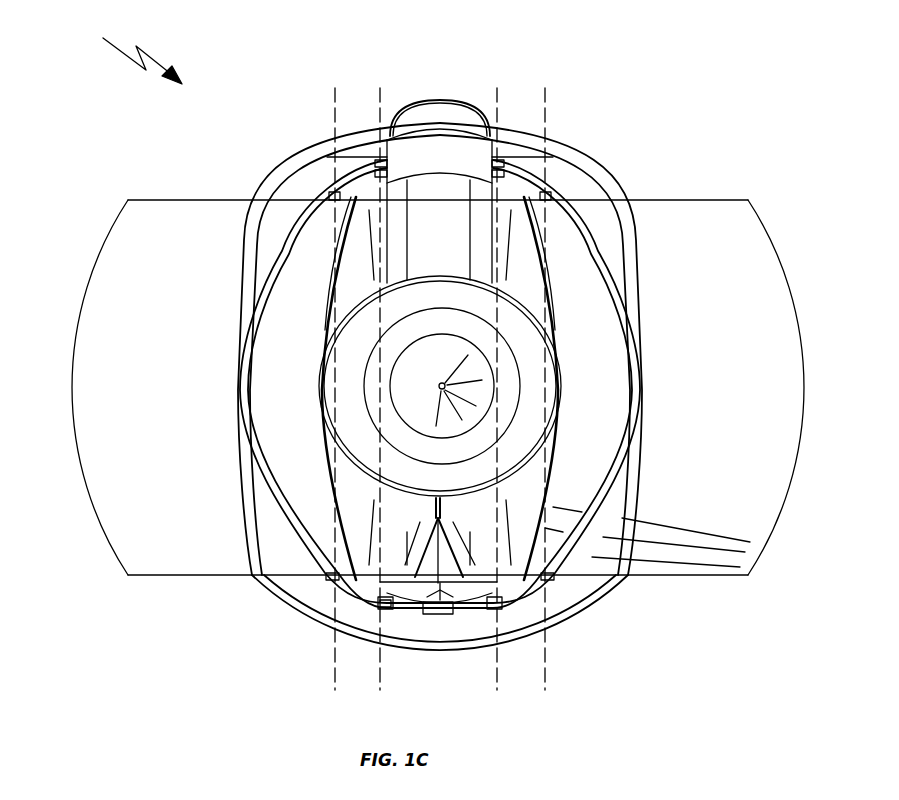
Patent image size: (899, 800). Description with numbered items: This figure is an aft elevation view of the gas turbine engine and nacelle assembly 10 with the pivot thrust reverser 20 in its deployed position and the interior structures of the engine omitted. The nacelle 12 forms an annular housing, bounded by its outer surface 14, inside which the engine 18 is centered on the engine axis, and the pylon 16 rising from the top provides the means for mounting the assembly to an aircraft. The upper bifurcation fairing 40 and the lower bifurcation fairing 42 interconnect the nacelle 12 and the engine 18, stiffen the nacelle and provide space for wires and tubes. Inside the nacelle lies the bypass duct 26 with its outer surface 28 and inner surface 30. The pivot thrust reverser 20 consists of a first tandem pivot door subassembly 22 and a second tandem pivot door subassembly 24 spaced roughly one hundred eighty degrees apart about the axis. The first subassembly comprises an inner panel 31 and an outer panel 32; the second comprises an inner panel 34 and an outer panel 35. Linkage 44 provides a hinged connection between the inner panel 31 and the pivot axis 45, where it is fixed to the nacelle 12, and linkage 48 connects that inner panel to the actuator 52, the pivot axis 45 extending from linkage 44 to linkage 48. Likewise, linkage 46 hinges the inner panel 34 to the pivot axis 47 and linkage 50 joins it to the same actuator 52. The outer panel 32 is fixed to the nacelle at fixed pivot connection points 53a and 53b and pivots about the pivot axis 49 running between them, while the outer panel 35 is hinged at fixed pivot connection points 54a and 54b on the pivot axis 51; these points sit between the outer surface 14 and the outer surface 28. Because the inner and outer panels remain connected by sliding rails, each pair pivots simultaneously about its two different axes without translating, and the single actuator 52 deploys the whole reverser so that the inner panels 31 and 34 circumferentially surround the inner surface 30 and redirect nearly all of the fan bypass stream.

The gas turbine engine and nacelle assembly 10 is at (129, 54).
The nacelle 12 is at (633, 182).
The outer surface of nacelle 14 is at (333, 627).
The pylon 16 is at (443, 98).
The engine 18 is at (510, 428).
The pivot thrust reverser 20 is at (747, 192).
The first tandem pivot door subassembly 22 is at (64, 350).
The second tandem pivot door subassembly 24 is at (818, 350).
The bypass duct 26 is at (403, 604).
The outer surface of bypass duct 28 is at (340, 600).
The inner surface of bypass duct 30 is at (330, 428).
The inner panel 31 is at (355, 513).
The outer panel 32 is at (340, 462).
The inner panel 34 is at (520, 271).
The outer panel 35 is at (577, 303).
The upper bifurcation fairing 40 is at (445, 200).
The lower bifurcation fairing 42 is at (453, 575).
The linkage 44 is at (330, 166).
The pivot axis 45 is at (379, 100).
The linkage 46 is at (552, 163).
The pivot axis 47 is at (498, 100).
The linkage 48 is at (375, 612).
The pivot axis 49 is at (334, 100).
The linkage 50 is at (540, 610).
The pivot axis 51 is at (546, 100).
The actuator 52 is at (455, 606).
The fixed pivot connection point 53a is at (335, 188).
The fixed pivot connection point 53b is at (326, 578).
The fixed pivot connection point 54a is at (545, 188).
The fixed pivot connection point 54b is at (547, 582).